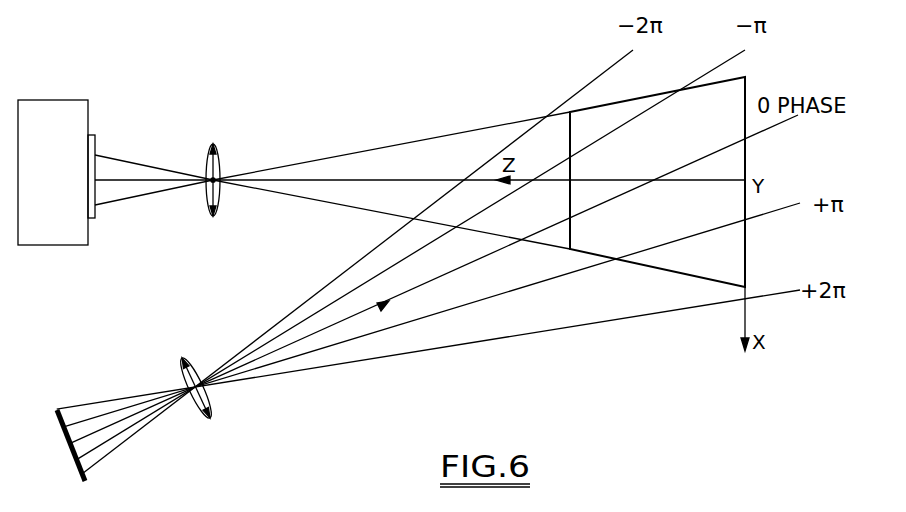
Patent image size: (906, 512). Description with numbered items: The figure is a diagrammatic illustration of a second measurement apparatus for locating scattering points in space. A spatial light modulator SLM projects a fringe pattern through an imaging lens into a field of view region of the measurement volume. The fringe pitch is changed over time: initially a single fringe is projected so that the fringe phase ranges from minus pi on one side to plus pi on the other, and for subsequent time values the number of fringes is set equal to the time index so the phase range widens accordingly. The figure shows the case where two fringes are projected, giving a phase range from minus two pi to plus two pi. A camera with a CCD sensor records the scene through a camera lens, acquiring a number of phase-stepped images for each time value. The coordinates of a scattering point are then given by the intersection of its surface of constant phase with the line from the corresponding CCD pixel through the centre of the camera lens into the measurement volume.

The CCD camera CCD is at (56, 172).
The spatial light modulator SLM is at (53, 430).